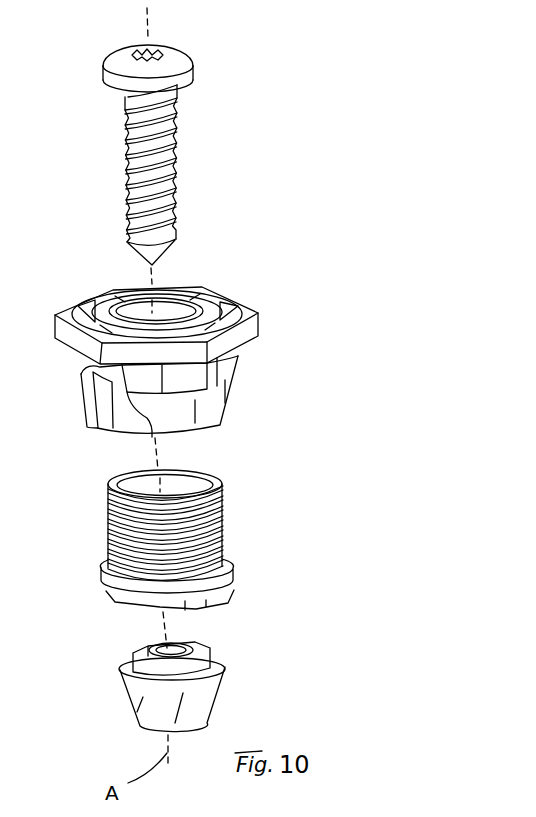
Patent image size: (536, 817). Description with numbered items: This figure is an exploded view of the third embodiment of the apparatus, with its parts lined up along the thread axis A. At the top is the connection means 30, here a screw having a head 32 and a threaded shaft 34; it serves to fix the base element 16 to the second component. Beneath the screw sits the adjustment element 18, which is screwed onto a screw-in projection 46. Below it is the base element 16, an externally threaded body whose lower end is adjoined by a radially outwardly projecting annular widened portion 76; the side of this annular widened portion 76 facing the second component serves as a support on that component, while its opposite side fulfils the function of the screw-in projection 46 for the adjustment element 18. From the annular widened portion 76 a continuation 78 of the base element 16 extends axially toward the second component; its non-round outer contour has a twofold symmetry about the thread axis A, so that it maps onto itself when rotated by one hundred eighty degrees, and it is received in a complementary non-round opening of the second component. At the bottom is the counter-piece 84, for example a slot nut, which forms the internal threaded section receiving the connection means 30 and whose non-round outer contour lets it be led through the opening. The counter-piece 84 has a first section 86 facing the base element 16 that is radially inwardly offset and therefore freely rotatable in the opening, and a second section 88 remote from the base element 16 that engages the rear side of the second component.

The connection means 30 is at (192, 141).
The head 32 is at (180, 62).
The shaft 34 is at (167, 180).
The adjustment element 18 is at (254, 392).
The base element 16 is at (167, 555).
The annular widened portion 76 is at (232, 580).
The continuation 78 is at (205, 604).
The screw-in projection 46 is at (102, 567).
The counter-piece 84 is at (181, 693).
The first section 86 is at (120, 668).
The second section 88 is at (133, 717).